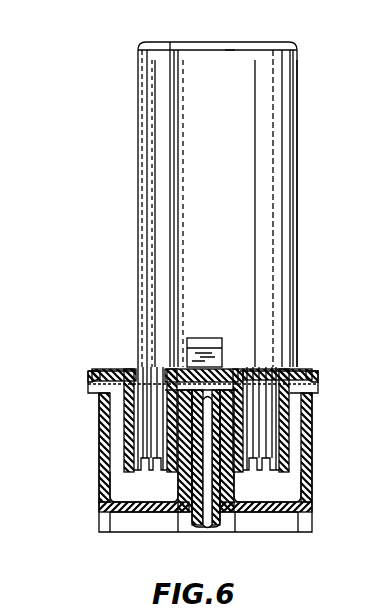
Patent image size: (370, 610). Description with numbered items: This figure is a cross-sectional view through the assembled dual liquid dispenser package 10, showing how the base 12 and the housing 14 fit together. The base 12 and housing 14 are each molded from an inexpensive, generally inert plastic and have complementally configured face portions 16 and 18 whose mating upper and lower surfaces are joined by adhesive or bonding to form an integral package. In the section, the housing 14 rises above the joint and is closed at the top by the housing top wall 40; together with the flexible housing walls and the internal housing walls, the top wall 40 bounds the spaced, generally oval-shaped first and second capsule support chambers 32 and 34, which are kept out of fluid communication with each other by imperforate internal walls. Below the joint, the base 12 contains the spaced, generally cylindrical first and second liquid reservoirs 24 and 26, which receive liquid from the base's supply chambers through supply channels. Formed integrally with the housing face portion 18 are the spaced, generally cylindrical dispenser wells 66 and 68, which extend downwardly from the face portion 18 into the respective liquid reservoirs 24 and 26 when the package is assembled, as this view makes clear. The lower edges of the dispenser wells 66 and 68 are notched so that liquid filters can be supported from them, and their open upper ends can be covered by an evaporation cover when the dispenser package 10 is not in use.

The dual liquid dispenser package 10 is at (116, 112).
The housing top wall 40 is at (239, 42).
The first capsule support chamber 32 is at (148, 203).
The second capsule support chamber 34 is at (264, 174).
The housing 14 is at (308, 278).
The housing face portion 18 is at (231, 367).
The base face portion 16 is at (98, 385).
The first dispenser well 66 is at (125, 411).
The second dispenser well 68 is at (284, 413).
The base 12 is at (90, 463).
The first liquid reservoir 24 is at (130, 490).
The second liquid reservoir 26 is at (273, 483).